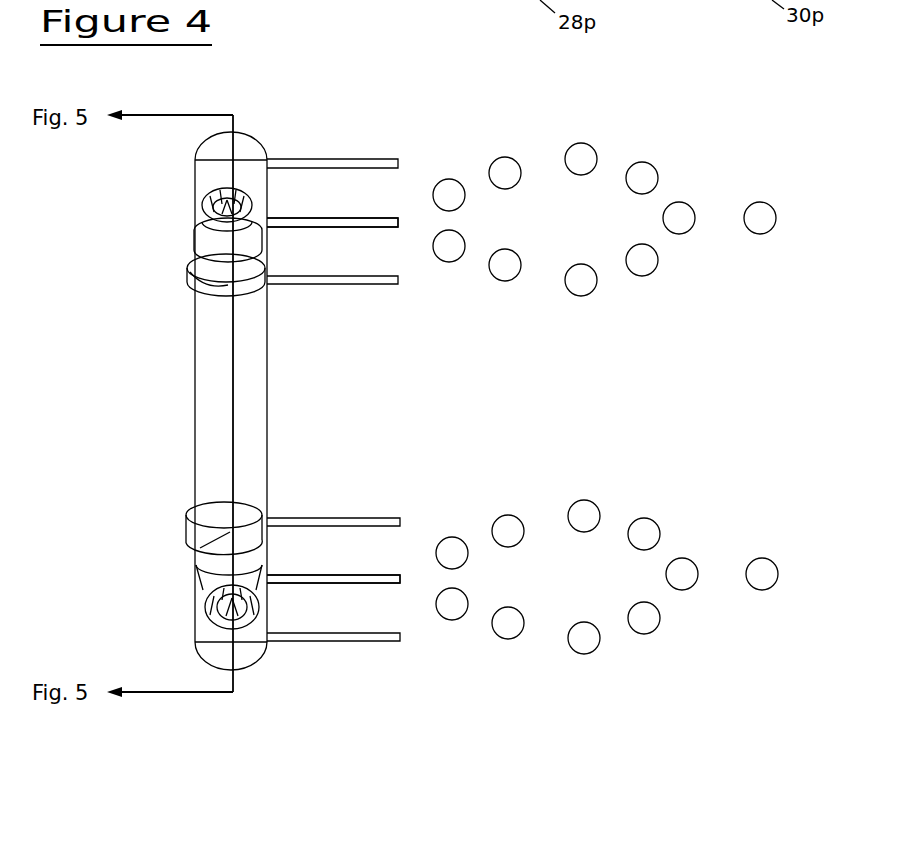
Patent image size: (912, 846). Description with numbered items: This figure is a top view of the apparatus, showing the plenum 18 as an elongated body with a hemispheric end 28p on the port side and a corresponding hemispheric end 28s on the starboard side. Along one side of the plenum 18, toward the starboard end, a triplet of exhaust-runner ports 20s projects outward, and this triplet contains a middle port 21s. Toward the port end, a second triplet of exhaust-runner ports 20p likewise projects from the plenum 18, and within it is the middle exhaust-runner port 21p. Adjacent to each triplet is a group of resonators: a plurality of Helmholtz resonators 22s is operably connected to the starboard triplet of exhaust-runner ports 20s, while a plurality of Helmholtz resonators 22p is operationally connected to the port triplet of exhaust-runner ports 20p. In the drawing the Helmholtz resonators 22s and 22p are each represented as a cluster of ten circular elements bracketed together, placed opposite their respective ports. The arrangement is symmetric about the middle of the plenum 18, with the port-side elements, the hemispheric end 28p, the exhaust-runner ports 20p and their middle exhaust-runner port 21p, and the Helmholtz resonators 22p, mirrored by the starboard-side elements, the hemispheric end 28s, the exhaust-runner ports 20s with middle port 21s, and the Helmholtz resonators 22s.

The plenum 18 is at (198, 420).
The triplet of exhaust-runner ports 20s is at (324, 165).
The triplet of exhaust-runner ports 20p is at (324, 625).
The middle port 21s is at (400, 212).
The middle exhaust-runner port 21p is at (403, 581).
The Helmholtz resonators 22s is at (767, 253).
The Helmholtz resonators 22p is at (767, 545).
The hemispheric end 28s is at (255, 137).
The hemispheric end 28p is at (252, 668).